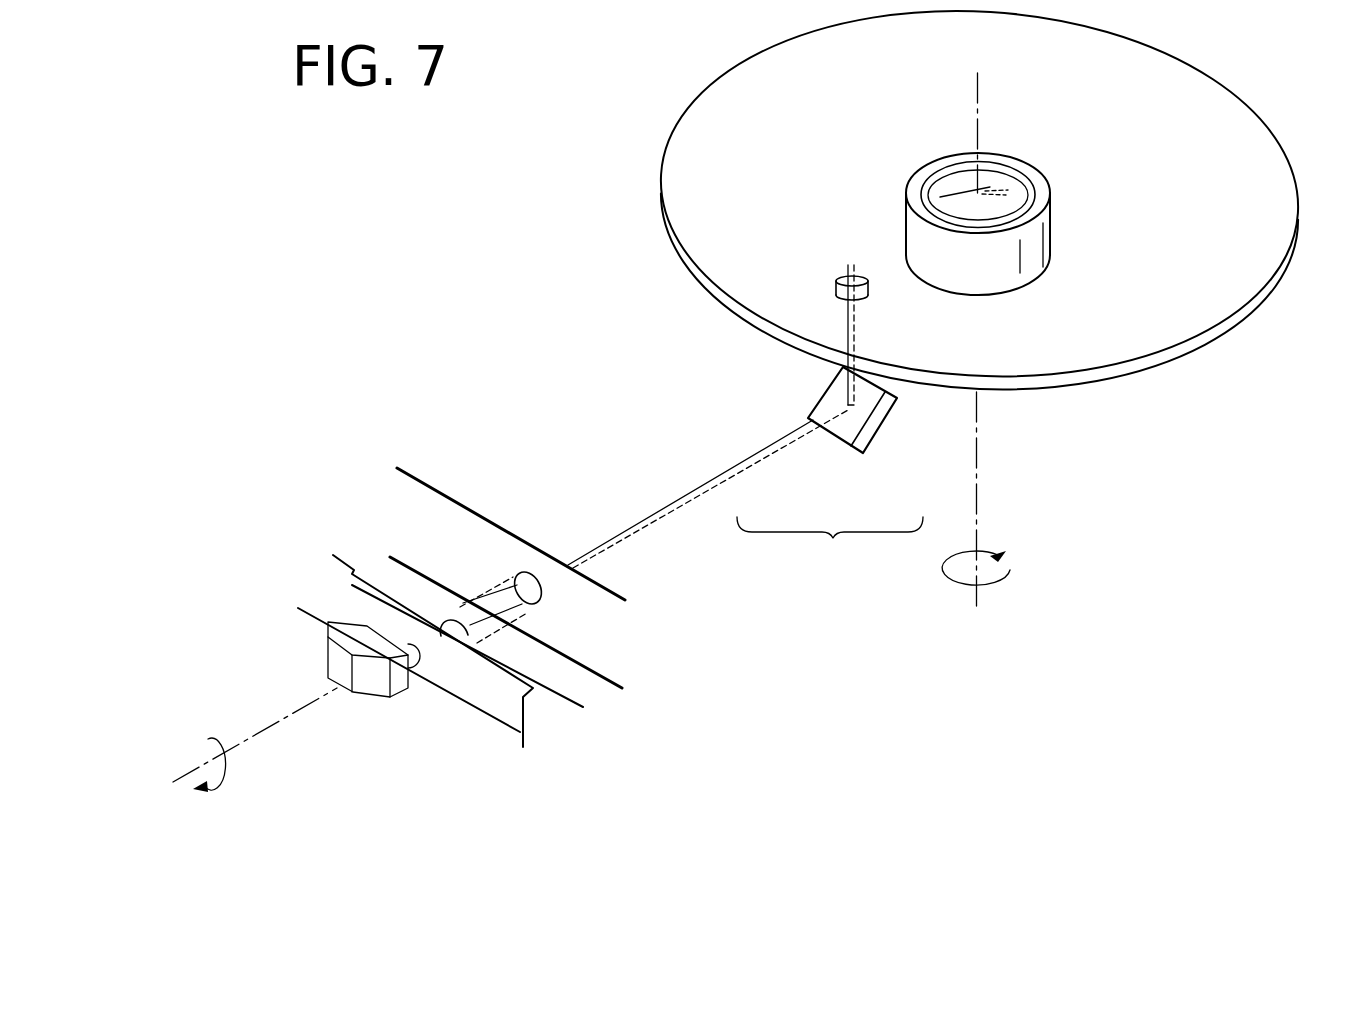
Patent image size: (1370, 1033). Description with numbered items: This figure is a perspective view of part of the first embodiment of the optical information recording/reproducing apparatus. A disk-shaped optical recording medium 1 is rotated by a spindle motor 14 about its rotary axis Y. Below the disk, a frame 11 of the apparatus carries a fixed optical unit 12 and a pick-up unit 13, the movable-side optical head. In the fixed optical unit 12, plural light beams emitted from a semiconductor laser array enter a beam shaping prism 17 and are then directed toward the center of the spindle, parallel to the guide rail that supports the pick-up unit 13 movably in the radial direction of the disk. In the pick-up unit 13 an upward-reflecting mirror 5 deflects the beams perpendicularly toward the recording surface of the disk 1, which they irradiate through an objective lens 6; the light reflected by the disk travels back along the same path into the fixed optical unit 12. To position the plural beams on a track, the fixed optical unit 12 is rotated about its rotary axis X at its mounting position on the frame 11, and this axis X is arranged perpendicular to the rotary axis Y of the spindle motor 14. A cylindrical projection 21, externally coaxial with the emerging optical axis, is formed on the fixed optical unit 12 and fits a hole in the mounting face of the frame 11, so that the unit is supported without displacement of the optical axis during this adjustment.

The disk-shaped optical recording medium 1 is at (1268, 172).
The spindle motor 14 is at (1040, 186).
The objective lens 6 is at (837, 278).
The upward-reflecting mirror 5 is at (860, 420).
The pick-up unit 13 is at (830, 547).
The frame 11 is at (433, 503).
The cylindrical projection 21 is at (463, 612).
The fixed optical unit 12 is at (294, 560).
The beam shaping prism 17 is at (374, 690).
The rotary axis of the fixed-side optical head X is at (178, 795).
The rotary axis of the spindle motor Y is at (990, 606).